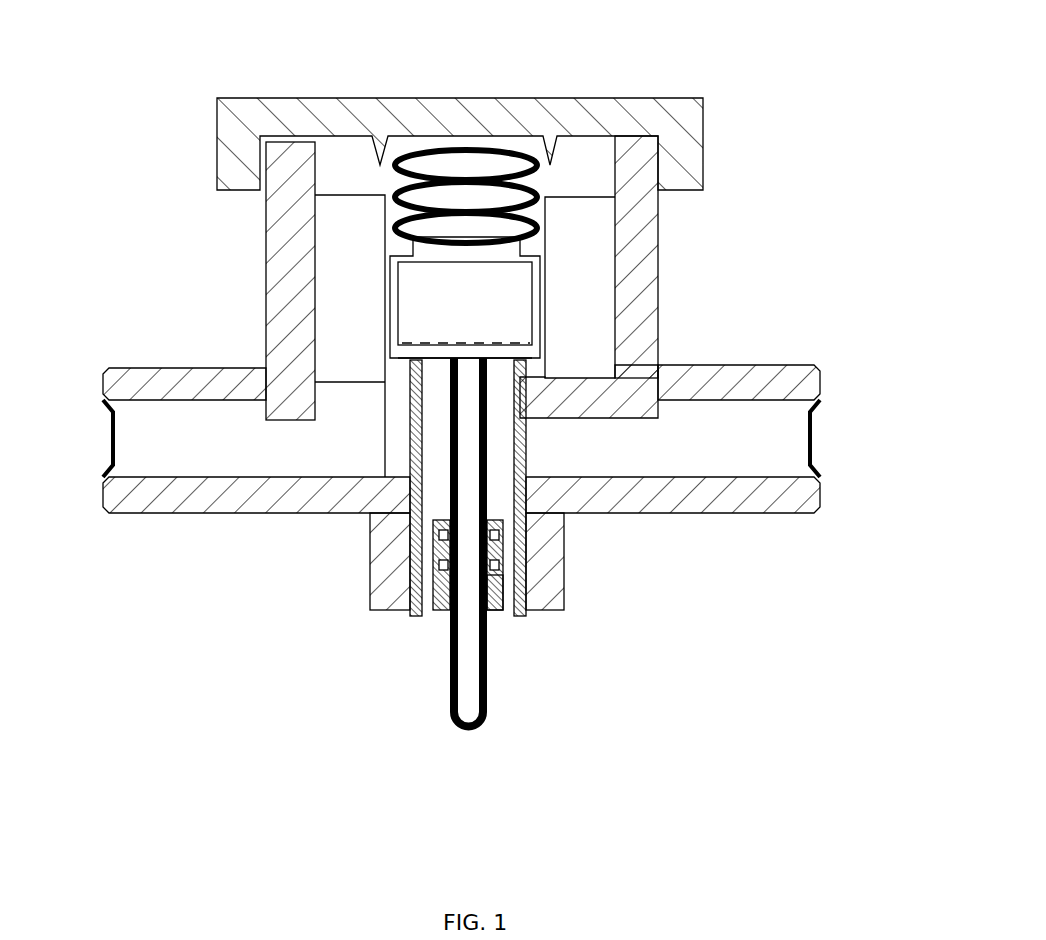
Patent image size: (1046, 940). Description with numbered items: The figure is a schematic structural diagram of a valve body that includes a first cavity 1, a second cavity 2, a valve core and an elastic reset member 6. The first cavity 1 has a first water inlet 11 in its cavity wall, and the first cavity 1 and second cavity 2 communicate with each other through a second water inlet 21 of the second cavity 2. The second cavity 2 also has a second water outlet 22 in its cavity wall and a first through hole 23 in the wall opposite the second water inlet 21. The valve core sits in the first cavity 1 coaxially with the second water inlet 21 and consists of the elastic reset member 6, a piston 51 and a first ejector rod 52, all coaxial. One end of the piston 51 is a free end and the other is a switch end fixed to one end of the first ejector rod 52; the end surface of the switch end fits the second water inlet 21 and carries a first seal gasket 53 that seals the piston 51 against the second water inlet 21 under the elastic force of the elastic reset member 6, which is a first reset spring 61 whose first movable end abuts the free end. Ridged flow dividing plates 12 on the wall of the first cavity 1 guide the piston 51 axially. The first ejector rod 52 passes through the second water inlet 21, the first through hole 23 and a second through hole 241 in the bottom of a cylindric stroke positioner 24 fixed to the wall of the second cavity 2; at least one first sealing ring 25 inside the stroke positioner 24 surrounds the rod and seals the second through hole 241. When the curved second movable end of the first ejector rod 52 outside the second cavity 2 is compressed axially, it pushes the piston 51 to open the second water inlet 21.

The first cavity 1 is at (457, 259).
The ridged flow dividing plates 12 is at (593, 313).
The elastic reset member 6 is at (541, 127).
The first reset spring 61 is at (488, 186).
The piston 51 is at (435, 300).
The first seal gasket 53 is at (502, 353).
The second cavity 2 is at (464, 506).
The first water inlet 11 is at (282, 456).
The second water outlet 22 is at (648, 458).
The second water inlet 21 is at (428, 380).
The cylindric stroke positioner 24 is at (517, 545).
The first through hole 23 is at (405, 614).
The second through hole 241 is at (448, 483).
The first sealing ring 25 is at (497, 587).
The first ejector rod 52 is at (468, 410).